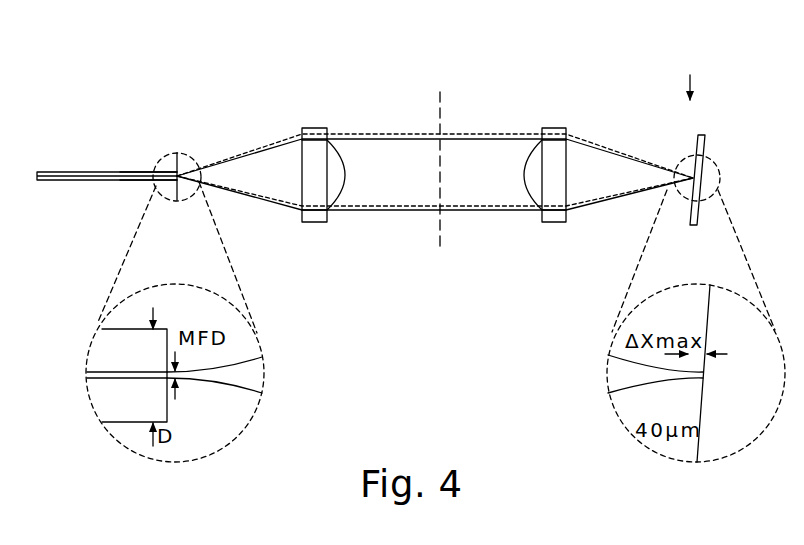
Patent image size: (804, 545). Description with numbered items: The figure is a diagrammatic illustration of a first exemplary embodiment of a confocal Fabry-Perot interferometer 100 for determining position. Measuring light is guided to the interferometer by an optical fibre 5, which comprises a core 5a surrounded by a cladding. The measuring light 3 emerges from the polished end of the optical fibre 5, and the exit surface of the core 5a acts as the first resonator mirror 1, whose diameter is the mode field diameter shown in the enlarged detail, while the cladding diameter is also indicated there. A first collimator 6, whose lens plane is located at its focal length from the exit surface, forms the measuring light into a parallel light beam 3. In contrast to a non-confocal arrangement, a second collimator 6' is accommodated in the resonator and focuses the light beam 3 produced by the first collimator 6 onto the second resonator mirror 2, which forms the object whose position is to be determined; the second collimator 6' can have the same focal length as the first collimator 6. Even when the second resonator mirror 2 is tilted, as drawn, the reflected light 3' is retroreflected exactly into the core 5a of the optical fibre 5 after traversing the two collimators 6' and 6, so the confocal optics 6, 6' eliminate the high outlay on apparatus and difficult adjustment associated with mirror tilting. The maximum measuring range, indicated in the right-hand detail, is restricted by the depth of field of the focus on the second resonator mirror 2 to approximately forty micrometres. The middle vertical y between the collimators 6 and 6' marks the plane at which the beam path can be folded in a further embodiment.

The confocal Fabry-Perot interferometer 100 is at (507, 78).
The optical fibre 5 is at (62, 172).
The core 5a is at (140, 172).
The first resonator mirror 1 is at (181, 191).
The measuring light / light beam 3 is at (435, 227).
The reflected light 3' is at (435, 129).
The first collimator 6 is at (323, 203).
The second collimator 6' is at (556, 203).
The second resonator mirror 2 is at (697, 148).
The middle vertical y is at (440, 252).